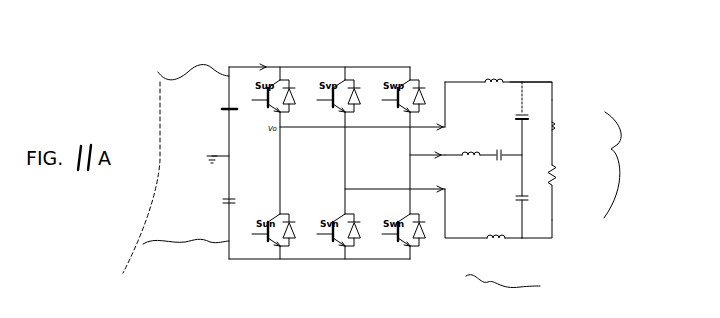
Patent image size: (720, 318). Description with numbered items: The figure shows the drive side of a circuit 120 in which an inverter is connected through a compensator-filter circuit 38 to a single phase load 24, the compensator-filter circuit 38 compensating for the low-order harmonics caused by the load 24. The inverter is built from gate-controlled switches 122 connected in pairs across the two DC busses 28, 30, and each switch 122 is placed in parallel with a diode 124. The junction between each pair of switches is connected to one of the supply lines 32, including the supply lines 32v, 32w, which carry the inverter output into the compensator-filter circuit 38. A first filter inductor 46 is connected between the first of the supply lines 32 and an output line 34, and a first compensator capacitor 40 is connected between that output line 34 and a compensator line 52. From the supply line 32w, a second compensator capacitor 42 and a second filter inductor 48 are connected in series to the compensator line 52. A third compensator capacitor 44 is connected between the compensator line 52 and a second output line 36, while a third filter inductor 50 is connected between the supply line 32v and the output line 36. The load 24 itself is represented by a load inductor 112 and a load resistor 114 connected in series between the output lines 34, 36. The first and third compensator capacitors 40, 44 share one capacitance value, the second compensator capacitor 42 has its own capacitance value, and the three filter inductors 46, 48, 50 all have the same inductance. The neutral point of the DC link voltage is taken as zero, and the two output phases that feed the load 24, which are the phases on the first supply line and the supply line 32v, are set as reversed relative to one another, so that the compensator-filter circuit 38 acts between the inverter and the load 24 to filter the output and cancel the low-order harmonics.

The DC bus 28 is at (233, 65).
The DC bus 30 is at (238, 267).
The gate-controlled switch 122 is at (321, 91).
The diode 124 is at (430, 97).
The first filter inductor 46 is at (492, 80).
The output line 34 is at (516, 81).
The supply line 32 is at (485, 103).
The supply line 32w is at (460, 153).
The supply line 32v is at (460, 236).
The second filter inductor 48 is at (462, 158).
The second compensator capacitor 42 is at (500, 160).
The first compensator capacitor 40 is at (520, 115).
The compensator line 52 is at (524, 157).
The third compensator capacitor 44 is at (520, 200).
The third filter inductor 50 is at (496, 241).
The output line 36 is at (526, 241).
The compensator-filter circuit 38 is at (487, 289).
The load inductor 112 is at (563, 127).
The load resistor 114 is at (556, 188).
The single phase load 24 is at (622, 153).
The circuit 120 is at (601, 63).